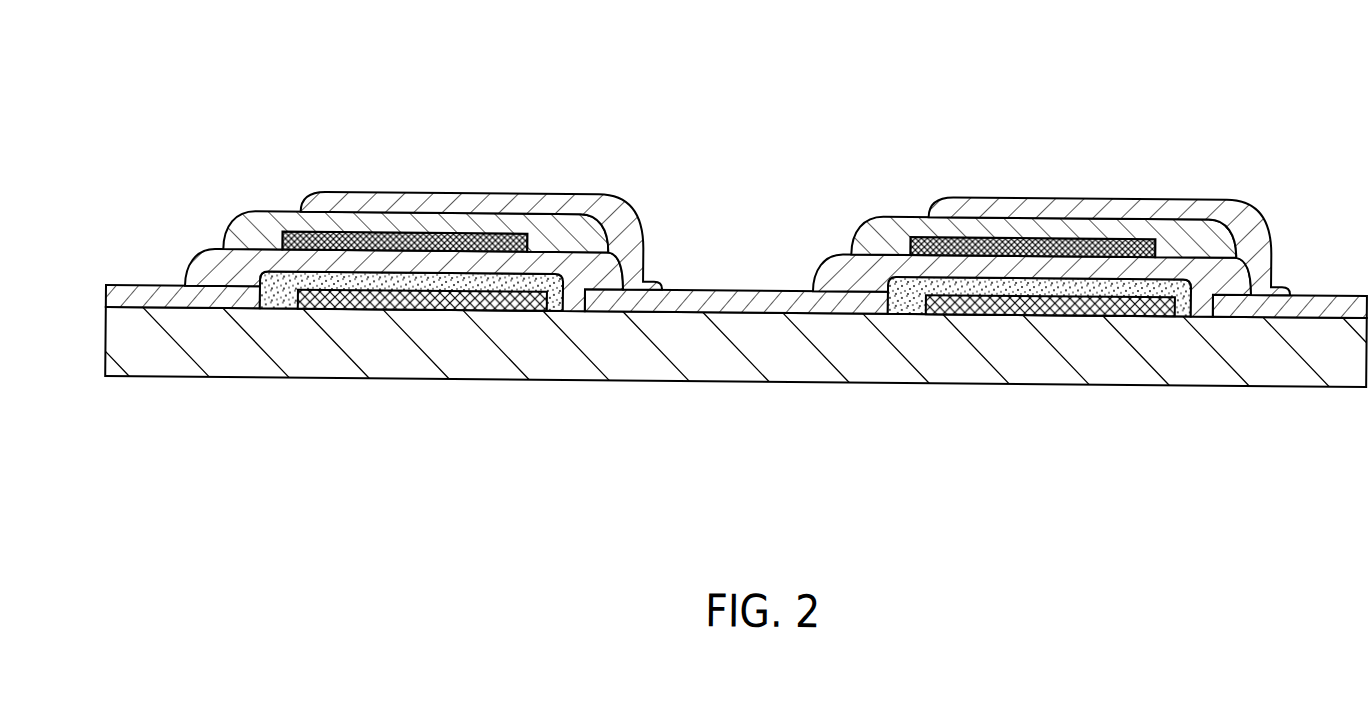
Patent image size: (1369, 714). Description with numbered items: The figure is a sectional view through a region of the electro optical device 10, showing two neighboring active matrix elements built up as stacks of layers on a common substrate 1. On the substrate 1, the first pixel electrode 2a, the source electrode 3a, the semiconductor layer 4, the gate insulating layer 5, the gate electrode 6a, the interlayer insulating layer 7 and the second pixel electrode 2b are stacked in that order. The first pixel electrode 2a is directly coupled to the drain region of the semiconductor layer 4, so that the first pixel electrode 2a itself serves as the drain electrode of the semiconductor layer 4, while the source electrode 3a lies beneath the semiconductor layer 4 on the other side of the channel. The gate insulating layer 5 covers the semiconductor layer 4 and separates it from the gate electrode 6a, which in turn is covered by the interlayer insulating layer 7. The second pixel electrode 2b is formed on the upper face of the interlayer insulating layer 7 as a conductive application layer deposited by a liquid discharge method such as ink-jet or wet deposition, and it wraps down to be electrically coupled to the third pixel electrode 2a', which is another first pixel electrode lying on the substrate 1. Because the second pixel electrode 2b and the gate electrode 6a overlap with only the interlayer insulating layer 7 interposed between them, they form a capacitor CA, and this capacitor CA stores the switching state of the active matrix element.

The substrate 1 is at (143, 358).
The first pixel electrode 2a is at (138, 287).
The third pixel electrode 2a' is at (976, 244).
The second pixel electrode 2b is at (362, 190).
The source electrode 3a is at (445, 300).
The semiconductor layer 4 is at (278, 300).
The gate insulating layer 5 is at (190, 262).
The gate electrode 6a is at (278, 228).
The interlayer insulating layer 7 is at (227, 232).
The electro optical device 10 is at (1284, 112).
The capacitor CA is at (390, 113).